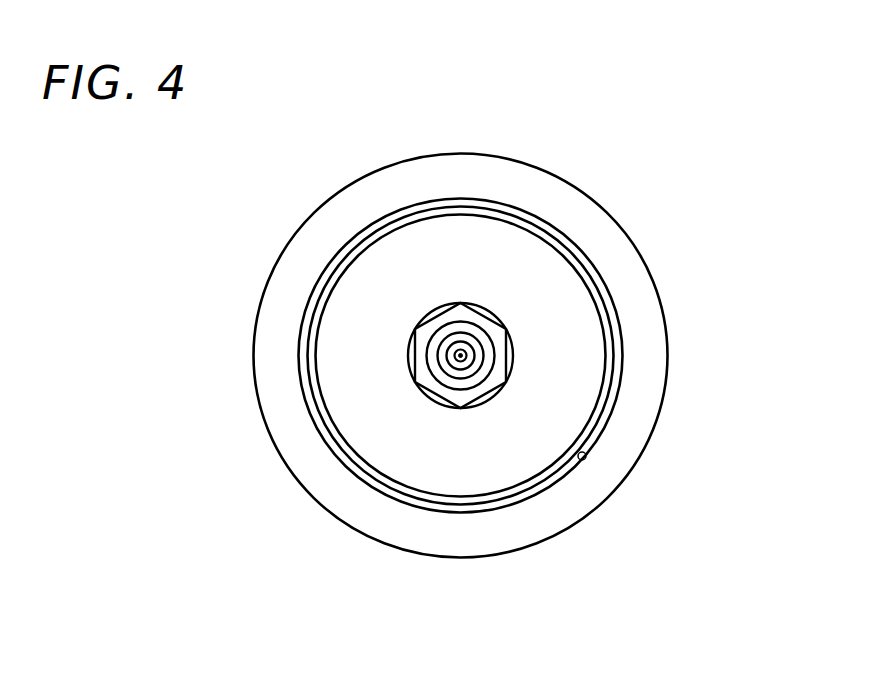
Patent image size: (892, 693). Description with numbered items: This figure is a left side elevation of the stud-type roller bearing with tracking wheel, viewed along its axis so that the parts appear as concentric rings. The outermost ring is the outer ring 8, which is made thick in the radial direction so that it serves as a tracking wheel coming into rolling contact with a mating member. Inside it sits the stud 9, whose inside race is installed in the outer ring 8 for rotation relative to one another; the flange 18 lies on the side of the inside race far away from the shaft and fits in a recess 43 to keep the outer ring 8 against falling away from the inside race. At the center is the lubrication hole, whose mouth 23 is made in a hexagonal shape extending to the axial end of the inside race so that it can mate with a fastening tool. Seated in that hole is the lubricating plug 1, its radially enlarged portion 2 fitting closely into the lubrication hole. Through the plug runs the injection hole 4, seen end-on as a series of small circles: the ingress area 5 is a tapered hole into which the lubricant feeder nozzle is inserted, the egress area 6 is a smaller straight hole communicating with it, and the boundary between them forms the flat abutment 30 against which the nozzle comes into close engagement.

The lubricating plug 1 is at (485, 372).
The radially enlarged portion 2 is at (436, 356).
The injection hole 4 is at (460, 364).
The ingress area 5 is at (443, 338).
The egress area 6 is at (455, 362).
The outer ring 8 is at (543, 190).
The stud 9 is at (555, 270).
The flange 18 is at (553, 308).
The mouth 23 is at (504, 351).
The flat abutment 30 is at (461, 342).
The recess 43 is at (586, 453).